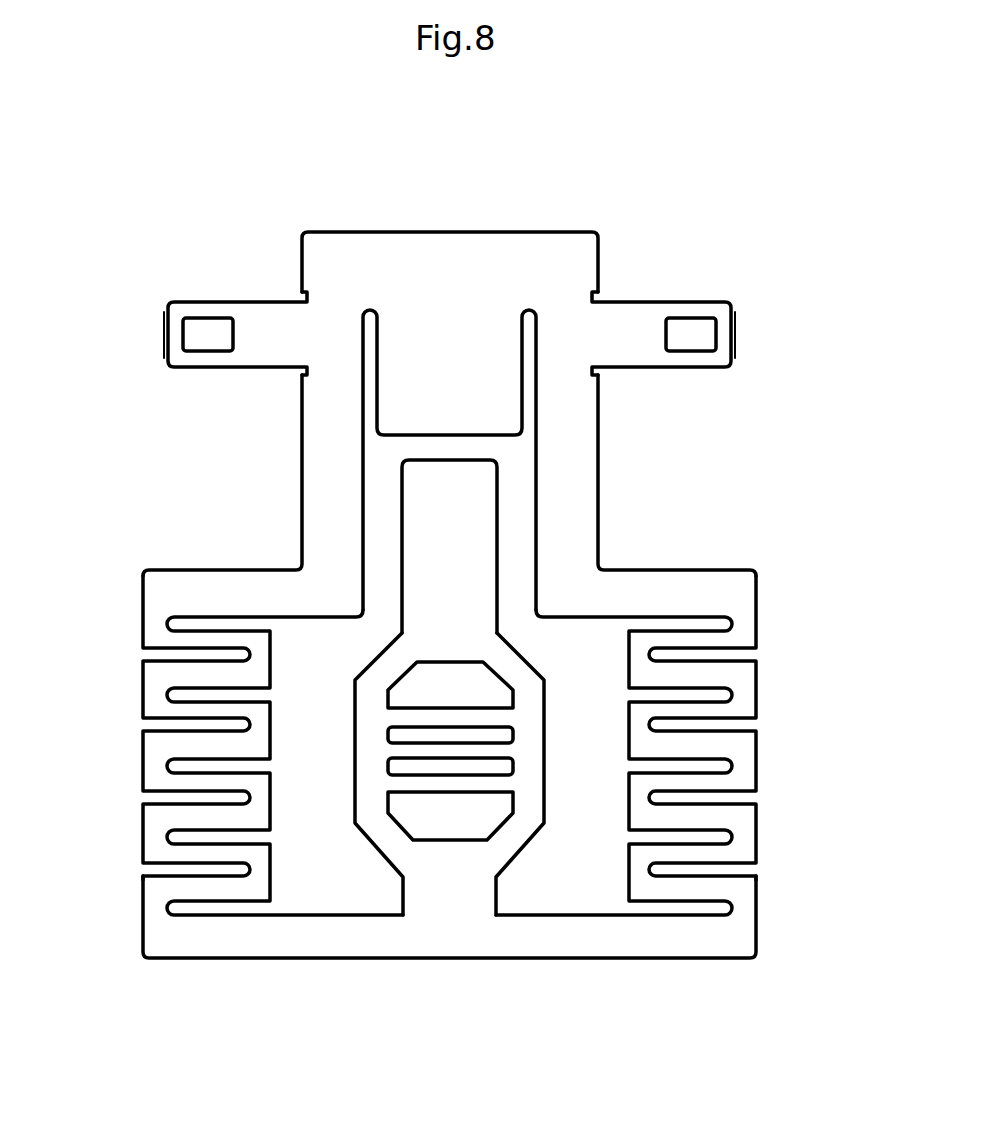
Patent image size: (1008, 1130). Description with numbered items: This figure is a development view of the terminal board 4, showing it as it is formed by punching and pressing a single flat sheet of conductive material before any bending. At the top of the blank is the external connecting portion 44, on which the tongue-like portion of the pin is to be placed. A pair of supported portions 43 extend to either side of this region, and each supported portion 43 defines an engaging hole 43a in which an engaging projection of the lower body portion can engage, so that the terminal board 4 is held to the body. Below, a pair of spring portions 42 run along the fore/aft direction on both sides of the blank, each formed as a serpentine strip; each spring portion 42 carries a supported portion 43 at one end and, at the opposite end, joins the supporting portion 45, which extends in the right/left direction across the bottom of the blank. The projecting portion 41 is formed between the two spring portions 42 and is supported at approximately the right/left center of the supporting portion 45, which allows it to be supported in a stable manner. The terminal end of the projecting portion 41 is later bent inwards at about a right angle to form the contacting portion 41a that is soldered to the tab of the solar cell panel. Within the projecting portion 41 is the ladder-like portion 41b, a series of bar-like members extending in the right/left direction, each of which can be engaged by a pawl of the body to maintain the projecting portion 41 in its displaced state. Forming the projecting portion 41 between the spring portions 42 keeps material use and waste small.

The terminal board 4 is at (235, 187).
The projecting portion 41 is at (502, 512).
The contacting portion 41a is at (487, 548).
The ladder-like portion 41b is at (512, 782).
The spring portions 42 is at (155, 763).
The supported portions 43 is at (257, 310).
The engaging holes 43a is at (208, 342).
The external connecting portion 44 is at (455, 337).
The supporting portion 45 is at (335, 947).